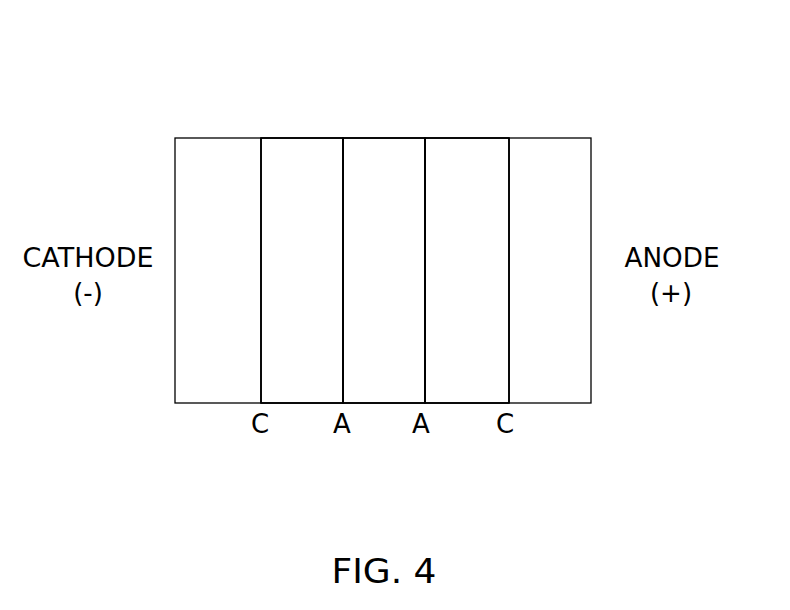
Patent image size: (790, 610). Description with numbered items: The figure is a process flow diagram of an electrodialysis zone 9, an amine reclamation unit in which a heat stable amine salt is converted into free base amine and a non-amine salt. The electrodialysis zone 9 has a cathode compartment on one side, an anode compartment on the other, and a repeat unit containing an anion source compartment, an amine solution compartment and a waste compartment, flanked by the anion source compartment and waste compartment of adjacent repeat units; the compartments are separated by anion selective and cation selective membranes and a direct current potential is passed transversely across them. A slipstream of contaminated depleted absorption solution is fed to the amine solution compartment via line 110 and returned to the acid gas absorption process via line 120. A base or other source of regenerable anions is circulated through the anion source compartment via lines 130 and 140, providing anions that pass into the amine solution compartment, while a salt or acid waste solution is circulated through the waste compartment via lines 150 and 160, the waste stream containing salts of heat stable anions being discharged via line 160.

The electrodialysis zone 9 is at (113, 128).
The feed stream line 110 is at (383, 137).
The return line 120 is at (383, 403).
The anion source feed line 130 is at (246, 218).
The anion source outlet line 140 is at (246, 324).
The waste solution feed line 150 is at (521, 218).
The waste discharge line 160 is at (520, 324).